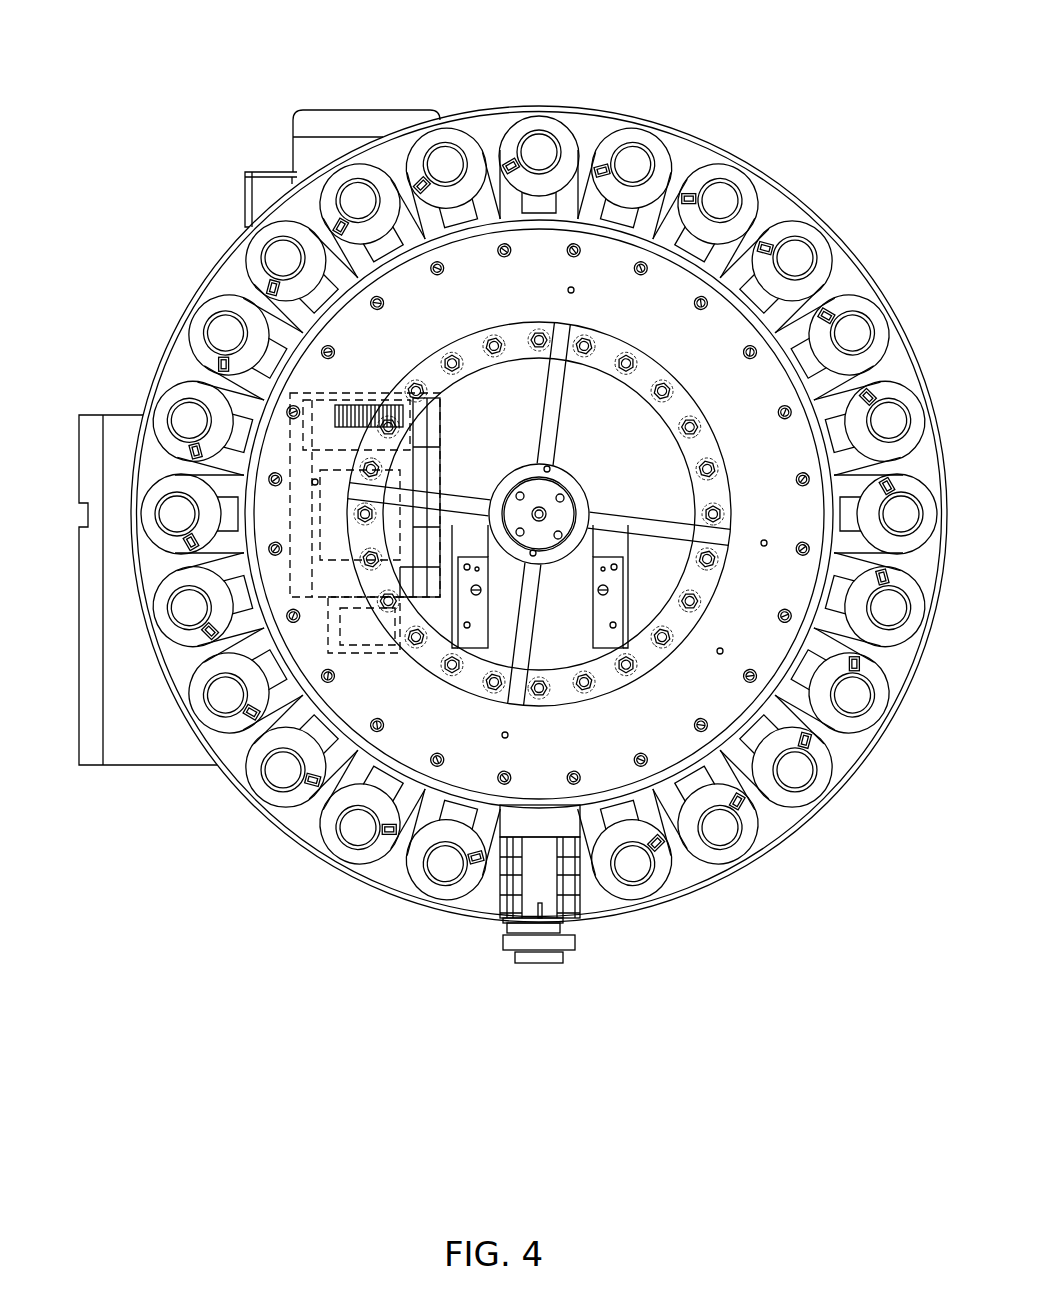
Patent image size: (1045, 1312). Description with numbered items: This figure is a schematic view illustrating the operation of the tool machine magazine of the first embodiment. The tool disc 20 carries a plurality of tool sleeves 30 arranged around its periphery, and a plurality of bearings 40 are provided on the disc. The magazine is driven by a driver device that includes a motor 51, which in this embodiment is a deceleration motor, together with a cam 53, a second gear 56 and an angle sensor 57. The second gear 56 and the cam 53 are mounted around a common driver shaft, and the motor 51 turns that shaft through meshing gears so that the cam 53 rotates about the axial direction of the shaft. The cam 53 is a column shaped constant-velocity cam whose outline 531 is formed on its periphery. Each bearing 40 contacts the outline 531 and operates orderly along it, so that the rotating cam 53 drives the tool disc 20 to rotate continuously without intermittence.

The tool disc 20 is at (668, 290).
The tool sleeves 30 is at (641, 127).
The bearings 40 is at (357, 563).
The motor 51 is at (371, 118).
The cam 53 is at (340, 532).
The outline 531 is at (330, 522).
The second gear 56 is at (347, 422).
The angle sensor 57 is at (268, 658).